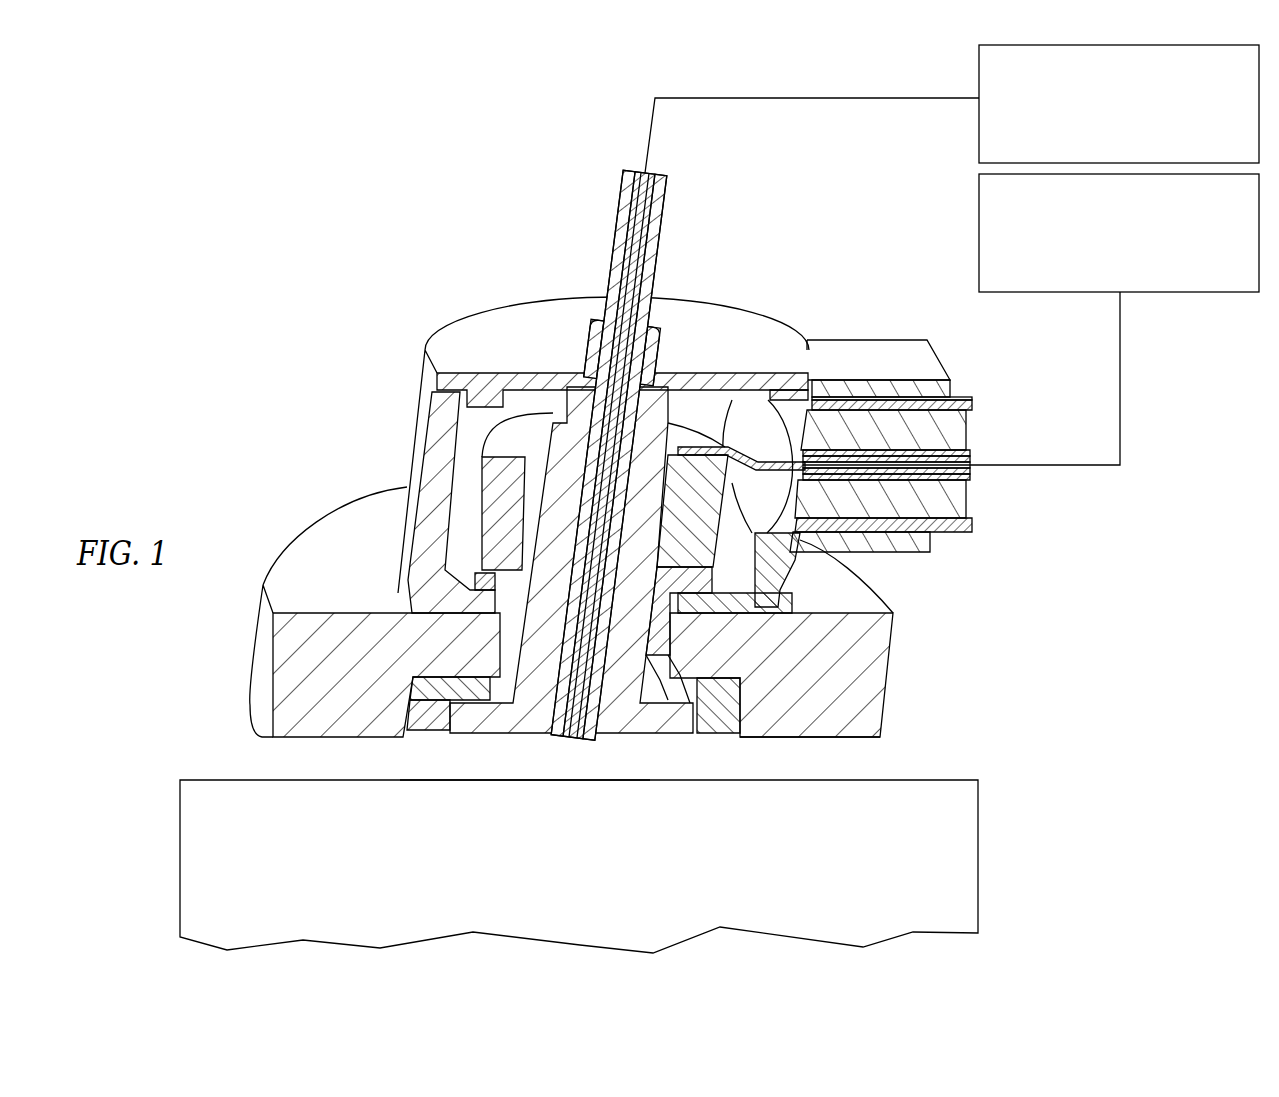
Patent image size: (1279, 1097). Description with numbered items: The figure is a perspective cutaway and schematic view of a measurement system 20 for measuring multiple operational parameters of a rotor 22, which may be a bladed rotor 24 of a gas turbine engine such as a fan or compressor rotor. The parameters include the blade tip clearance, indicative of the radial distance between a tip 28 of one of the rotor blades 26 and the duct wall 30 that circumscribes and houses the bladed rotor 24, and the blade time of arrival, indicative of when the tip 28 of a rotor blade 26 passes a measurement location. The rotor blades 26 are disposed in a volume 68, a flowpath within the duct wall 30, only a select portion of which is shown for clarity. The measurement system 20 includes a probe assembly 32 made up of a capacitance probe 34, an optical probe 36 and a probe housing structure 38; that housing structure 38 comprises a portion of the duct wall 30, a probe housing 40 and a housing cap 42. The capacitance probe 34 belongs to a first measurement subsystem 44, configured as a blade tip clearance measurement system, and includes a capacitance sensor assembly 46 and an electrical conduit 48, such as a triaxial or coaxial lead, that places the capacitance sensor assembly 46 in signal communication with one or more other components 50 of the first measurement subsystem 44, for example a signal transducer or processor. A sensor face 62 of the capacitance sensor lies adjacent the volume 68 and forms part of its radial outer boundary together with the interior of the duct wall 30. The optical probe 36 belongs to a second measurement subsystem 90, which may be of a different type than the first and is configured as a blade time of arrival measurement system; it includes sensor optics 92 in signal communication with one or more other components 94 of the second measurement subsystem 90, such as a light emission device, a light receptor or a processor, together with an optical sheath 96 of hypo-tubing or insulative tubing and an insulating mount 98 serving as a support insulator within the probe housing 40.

The measurement system 20 is at (392, 183).
The rotor 22 is at (537, 813).
The bladed rotor 24 is at (168, 765).
The rotor blades 26 is at (510, 887).
The tip 28 is at (960, 780).
The duct wall 30 is at (893, 688).
The probe assembly 32 is at (355, 253).
The capacitance probe 34 is at (468, 757).
The optical probe 36 is at (577, 765).
The probe housing structure 38 is at (325, 497).
The probe housing 40 is at (423, 427).
The housing cap 42 is at (448, 338).
The first measurement subsystem 44 is at (1130, 390).
The capacitance sensor assembly 46 is at (668, 752).
The electrical conduit 48 is at (970, 388).
The components of first measurement subsystem 50 is at (1105, 279).
The sensor face 62 is at (612, 738).
The volume 68 is at (752, 772).
The second measurement subsystem 90 is at (820, 82).
The sensor optics 92 is at (660, 165).
The components of second measurement subsystem 94 is at (1105, 150).
The optical sheath 96 is at (666, 213).
The insulating mount 98 is at (657, 347).